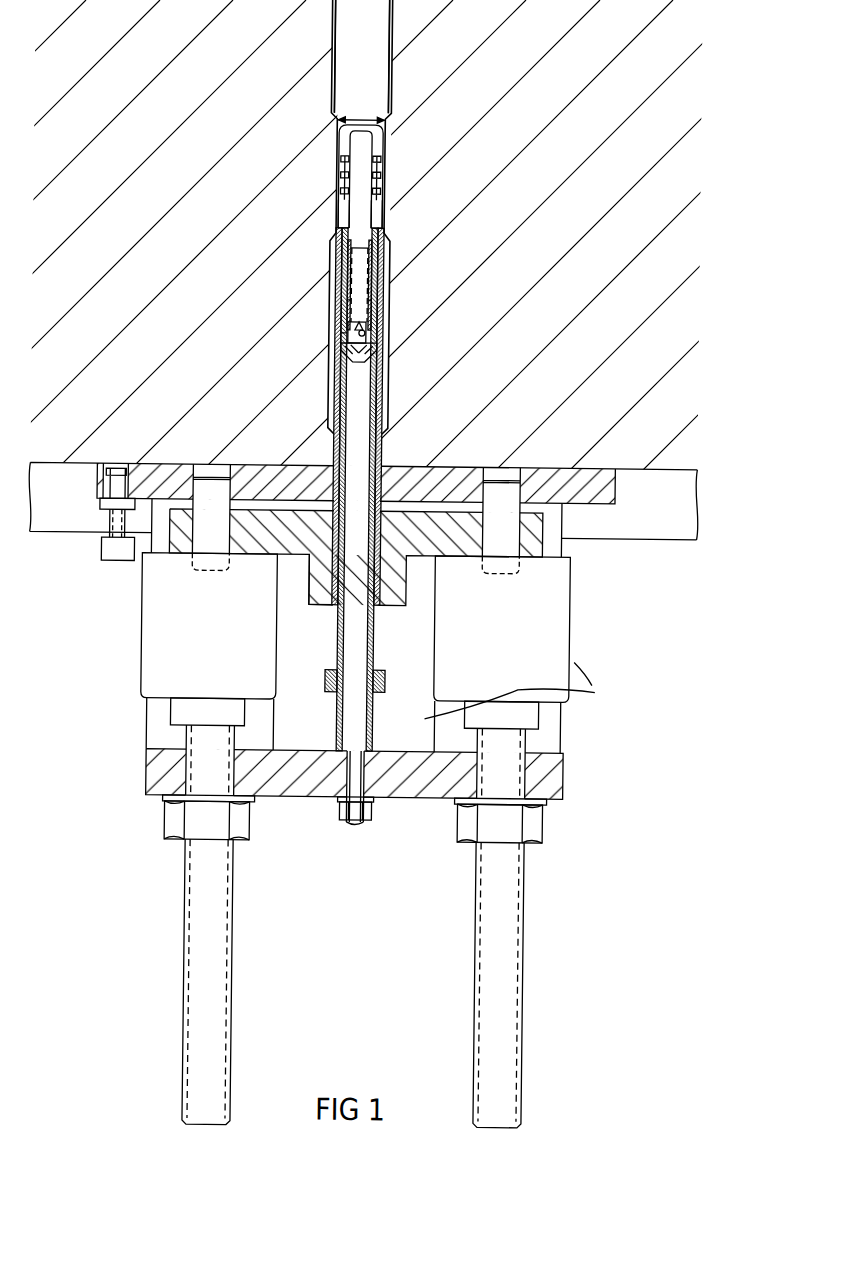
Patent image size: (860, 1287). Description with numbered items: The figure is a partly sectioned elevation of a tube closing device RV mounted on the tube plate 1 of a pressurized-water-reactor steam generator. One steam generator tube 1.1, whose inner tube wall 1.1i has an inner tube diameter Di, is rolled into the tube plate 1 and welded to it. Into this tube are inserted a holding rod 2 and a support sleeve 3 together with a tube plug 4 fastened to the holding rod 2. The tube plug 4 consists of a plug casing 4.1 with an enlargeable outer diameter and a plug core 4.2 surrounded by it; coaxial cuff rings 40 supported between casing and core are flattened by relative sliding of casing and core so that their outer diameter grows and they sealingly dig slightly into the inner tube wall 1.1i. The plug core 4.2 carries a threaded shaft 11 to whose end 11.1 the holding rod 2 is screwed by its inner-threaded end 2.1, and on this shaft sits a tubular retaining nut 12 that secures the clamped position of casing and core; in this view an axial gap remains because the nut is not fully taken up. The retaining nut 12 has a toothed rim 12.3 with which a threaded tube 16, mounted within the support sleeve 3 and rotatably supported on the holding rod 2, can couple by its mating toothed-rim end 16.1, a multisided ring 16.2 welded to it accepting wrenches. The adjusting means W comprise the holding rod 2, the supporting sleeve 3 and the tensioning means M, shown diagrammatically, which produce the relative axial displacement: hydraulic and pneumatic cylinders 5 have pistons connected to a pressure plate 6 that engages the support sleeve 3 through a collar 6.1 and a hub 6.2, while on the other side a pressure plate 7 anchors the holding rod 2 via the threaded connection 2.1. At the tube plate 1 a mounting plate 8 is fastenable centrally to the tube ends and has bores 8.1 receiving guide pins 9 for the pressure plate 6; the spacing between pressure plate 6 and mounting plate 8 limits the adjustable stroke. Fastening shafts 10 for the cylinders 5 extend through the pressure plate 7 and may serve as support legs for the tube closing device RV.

The tube plate 1 is at (135, 390).
The steam generator tube 1.1 is at (328, 364).
The inner tube wall 1.1i is at (381, 89).
The inner tube diameter Di is at (361, 117).
The holding rod 2 is at (362, 394).
The threaded connection 2.1 is at (410, 347).
The support sleeve 3 is at (372, 338).
The tube plug 4 is at (366, 136).
The plug casing 4.1 is at (410, 193).
The plug core 4.2 is at (333, 193).
The cuff rings 40 is at (379, 156).
The hydraulic and pneumatic cylinders 5 is at (160, 609).
The pressure plate 6 is at (304, 538).
The collar 6.1 is at (334, 600).
The hub 6.2 is at (315, 568).
The pressure plate 7 is at (272, 789).
The mounting plate 8 is at (257, 483).
The bores 8.1 is at (205, 466).
The guide pins 9 is at (200, 490).
The fastening shafts 10 is at (220, 877).
The threaded shaft 11 is at (362, 278).
The end of threaded shaft 11.1 is at (366, 316).
The retaining nut 12 is at (377, 253).
The toothed rim 12.3 is at (343, 301).
The threaded tube 16 is at (339, 411).
The toothed-rim end 16.1 is at (352, 334).
The multisided ring 16.2 is at (381, 671).
The adjusting means W is at (417, 435).
The tube closing device RV is at (487, 463).
The tensioning means M is at (621, 701).